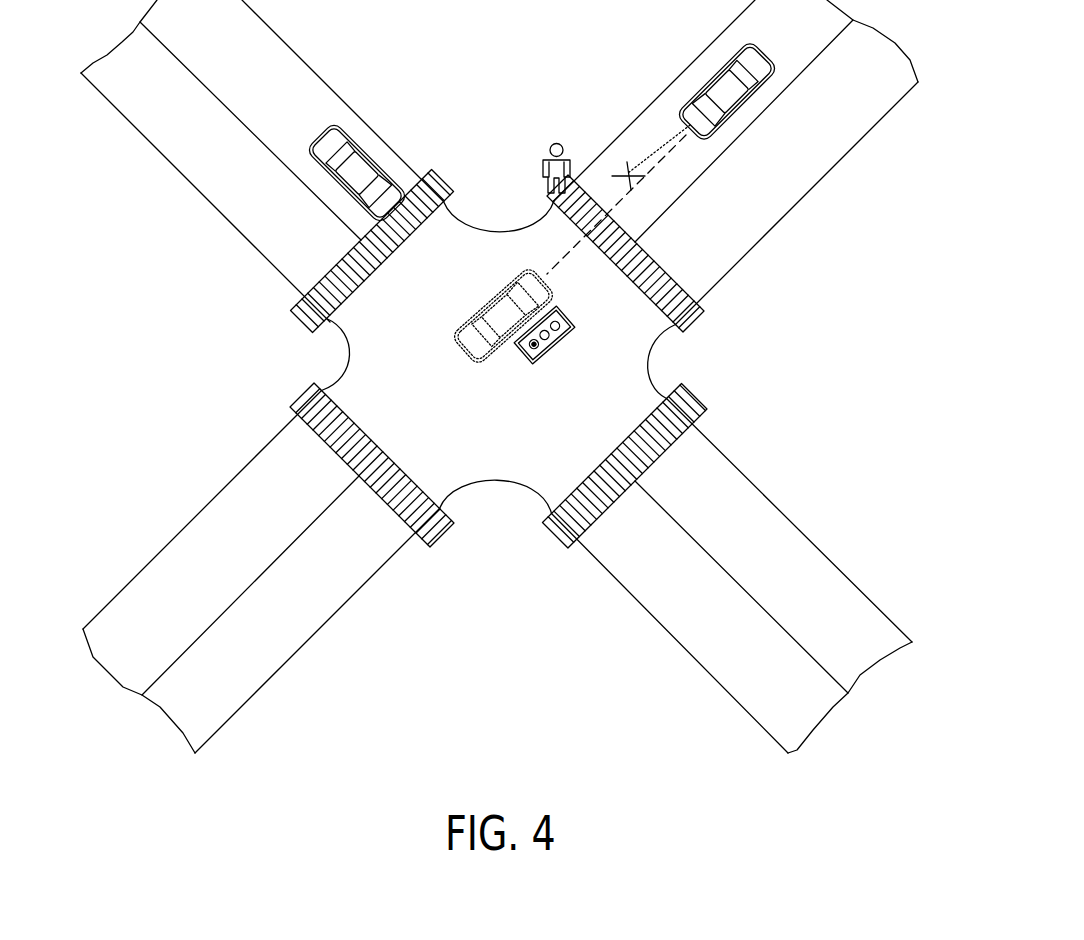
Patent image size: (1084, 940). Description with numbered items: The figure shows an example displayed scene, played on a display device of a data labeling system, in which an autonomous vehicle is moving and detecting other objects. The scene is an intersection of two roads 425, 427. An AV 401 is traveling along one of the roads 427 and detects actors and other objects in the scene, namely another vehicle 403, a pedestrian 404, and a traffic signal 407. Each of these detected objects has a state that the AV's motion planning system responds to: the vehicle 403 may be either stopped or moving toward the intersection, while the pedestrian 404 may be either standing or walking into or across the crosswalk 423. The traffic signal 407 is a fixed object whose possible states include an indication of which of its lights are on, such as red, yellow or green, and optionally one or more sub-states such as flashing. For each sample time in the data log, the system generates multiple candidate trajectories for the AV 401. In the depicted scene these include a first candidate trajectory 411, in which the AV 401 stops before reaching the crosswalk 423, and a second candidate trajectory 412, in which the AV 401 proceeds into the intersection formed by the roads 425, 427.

The AV 401 is at (713, 73).
The vehicle 403 is at (365, 150).
The pedestrian 404 is at (551, 146).
The traffic signal 407 is at (553, 350).
The first candidate trajectory 411 is at (647, 158).
The second candidate trajectory 412 is at (650, 173).
The crosswalk 423 is at (703, 313).
The road 425 is at (108, 106).
The road 427 is at (882, 118).